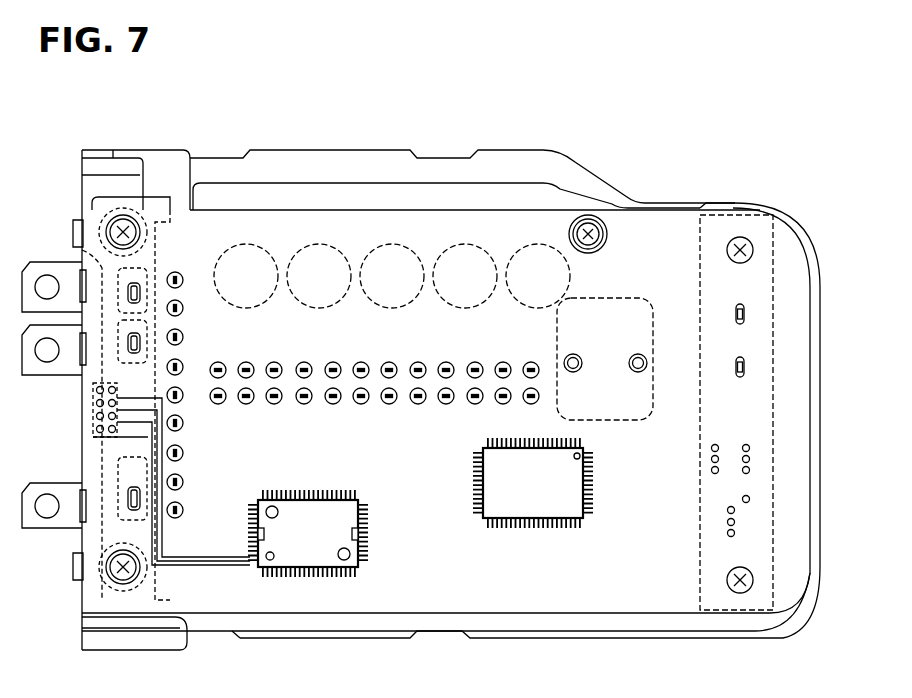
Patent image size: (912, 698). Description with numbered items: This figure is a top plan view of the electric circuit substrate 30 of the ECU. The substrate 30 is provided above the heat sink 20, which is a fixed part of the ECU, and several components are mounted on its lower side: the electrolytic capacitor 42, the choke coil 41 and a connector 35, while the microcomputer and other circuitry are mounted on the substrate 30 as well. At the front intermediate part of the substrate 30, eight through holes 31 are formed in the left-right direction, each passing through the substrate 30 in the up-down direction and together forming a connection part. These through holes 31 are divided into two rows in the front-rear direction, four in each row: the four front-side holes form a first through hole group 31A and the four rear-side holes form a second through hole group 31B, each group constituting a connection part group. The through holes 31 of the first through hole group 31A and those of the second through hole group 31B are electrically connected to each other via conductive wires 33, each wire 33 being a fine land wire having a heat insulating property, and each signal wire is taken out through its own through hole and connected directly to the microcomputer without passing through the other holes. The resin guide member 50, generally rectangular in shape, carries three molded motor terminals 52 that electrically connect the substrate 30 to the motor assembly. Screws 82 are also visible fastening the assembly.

The heat sink 20 is at (222, 170).
The electric circuit substrate 30 is at (447, 218).
The through holes 31 is at (100, 409).
The first through hole group 31A is at (98, 389).
The second through hole group 31B is at (100, 434).
The conductive wires 33 is at (38, 411).
The connector 35 is at (700, 255).
The choke coil 41 is at (626, 298).
The electrolytic capacitor 42 is at (312, 245).
The guide member 50 is at (100, 476).
The motor terminals 52 is at (28, 310).
The screws 82 is at (100, 228).